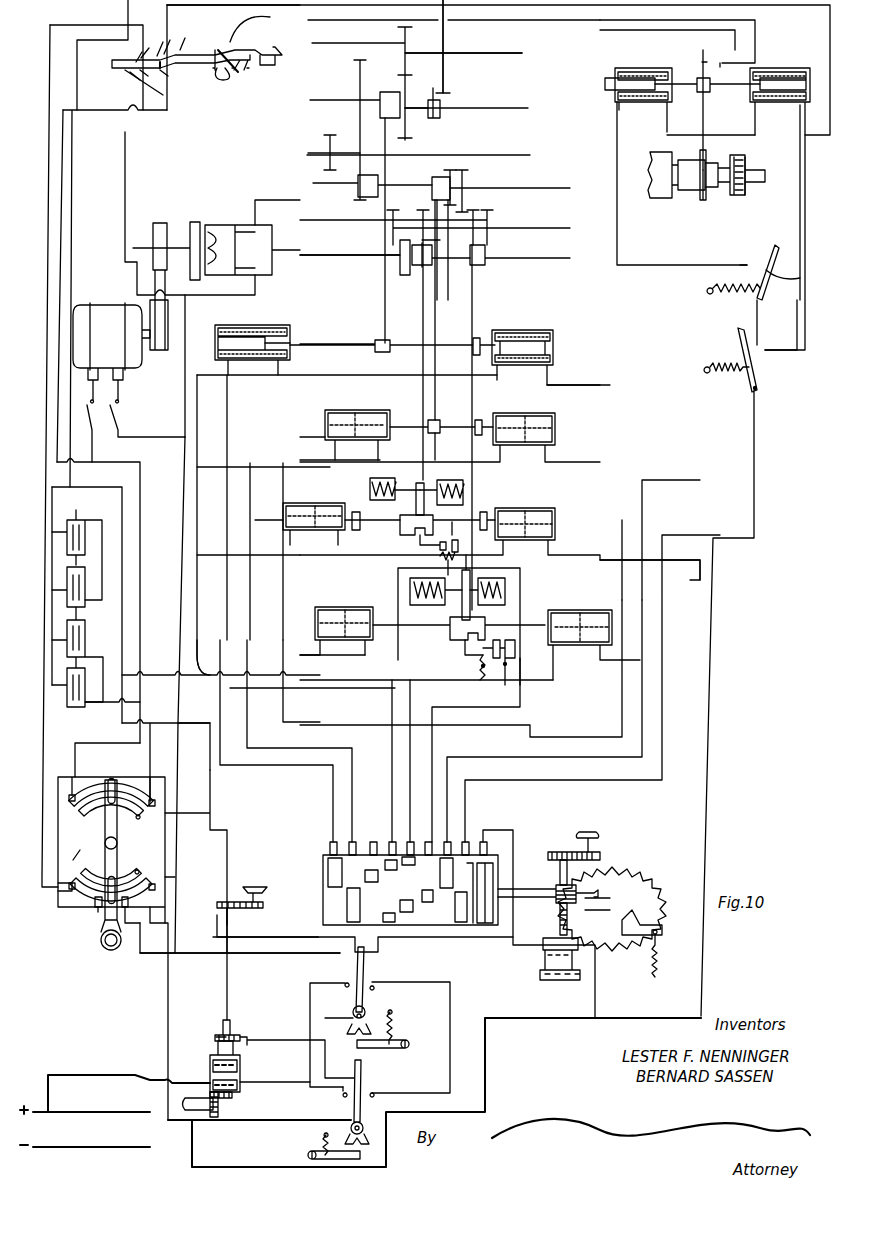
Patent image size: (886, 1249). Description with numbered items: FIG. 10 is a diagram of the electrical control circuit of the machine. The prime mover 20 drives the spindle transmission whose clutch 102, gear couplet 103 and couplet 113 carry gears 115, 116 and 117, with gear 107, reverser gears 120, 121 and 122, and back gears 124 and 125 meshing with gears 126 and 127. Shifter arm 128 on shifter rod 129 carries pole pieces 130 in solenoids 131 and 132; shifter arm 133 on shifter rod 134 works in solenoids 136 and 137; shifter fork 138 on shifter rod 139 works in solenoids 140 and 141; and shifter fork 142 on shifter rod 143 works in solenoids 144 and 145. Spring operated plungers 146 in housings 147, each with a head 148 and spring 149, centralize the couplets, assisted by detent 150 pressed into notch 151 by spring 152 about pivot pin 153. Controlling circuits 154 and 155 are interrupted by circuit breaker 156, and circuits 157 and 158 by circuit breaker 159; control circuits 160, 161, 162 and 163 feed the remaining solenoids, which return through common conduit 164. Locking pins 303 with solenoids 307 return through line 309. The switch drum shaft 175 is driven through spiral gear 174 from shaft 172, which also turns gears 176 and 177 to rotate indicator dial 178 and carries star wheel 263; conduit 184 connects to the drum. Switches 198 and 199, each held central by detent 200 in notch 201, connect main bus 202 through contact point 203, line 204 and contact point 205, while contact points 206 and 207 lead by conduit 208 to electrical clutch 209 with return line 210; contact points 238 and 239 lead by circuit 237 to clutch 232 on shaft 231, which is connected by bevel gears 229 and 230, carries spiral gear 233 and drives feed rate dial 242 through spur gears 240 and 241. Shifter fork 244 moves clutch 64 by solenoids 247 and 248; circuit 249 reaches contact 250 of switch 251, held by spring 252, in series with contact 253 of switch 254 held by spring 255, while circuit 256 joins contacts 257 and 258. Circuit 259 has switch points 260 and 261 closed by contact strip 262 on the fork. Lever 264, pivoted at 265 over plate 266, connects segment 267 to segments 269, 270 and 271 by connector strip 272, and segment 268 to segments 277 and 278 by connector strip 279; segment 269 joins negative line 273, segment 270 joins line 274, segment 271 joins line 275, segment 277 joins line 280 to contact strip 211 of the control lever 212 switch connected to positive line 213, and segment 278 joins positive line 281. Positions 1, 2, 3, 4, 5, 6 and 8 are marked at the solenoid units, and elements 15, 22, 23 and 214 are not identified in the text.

The relay position 1 is at (327, 643).
The relay position 2 is at (597, 655).
The relay position 3 is at (295, 545).
The relay position 4 is at (558, 547).
The relay position 5 is at (340, 453).
The relay position 6 is at (540, 465).
The relay position 8 is at (573, 377).
The contact 15 is at (500, 55).
The prime mover 20 is at (125, 304).
The motor switch 22 is at (168, 350).
The pulley drive 23 is at (154, 224).
The feed-rapid traverse clutch 64 is at (687, 200).
The clutch 102 is at (411, 282).
The gear couplet 103 is at (482, 272).
The gear 107 is at (483, 204).
The shiftable couplet 113 is at (434, 183).
The gear 115 is at (449, 170).
The gear 116 is at (462, 178).
The gear 117 is at (442, 264).
The gear 120 is at (364, 72).
The reverser gear 121 is at (352, 138).
The reverser gear 122 is at (330, 142).
The back gear 124 is at (408, 138).
The back gear 125 is at (439, 118).
The gear 126 is at (405, 36).
The gear 127 is at (450, 33).
The shifter arm 128 is at (390, 278).
The shifter rod 129 is at (353, 343).
The pole pieces 130 is at (254, 328).
The solenoid 131 is at (252, 324).
The solenoid 132 is at (547, 333).
The shifter arm 133 is at (458, 296).
The shifter rod 134 is at (399, 420).
The solenoid 136 is at (366, 408).
The solenoid 137 is at (545, 408).
The shifter fork 138 is at (411, 445).
The shifter rod 139 is at (351, 529).
The solenoid 140 is at (298, 504).
The solenoid 141 is at (565, 503).
The shifter fork 142 is at (495, 578).
The shifter rod 143 is at (517, 615).
The solenoid 144 is at (358, 605).
The solenoid 145 is at (603, 604).
The spring operated plungers 146 is at (407, 468).
The spring containing housing 147 is at (372, 494).
The enlarged head 148 is at (385, 470).
The spring 149 is at (373, 502).
The pivoted detent 150 is at (427, 543).
The V-shaped notch 151 is at (426, 522).
The spring 152 is at (402, 676).
The pivot pin 153 is at (472, 654).
The controlling circuit 154 is at (284, 577).
The controlling circuit 155 is at (609, 562).
The circuit breaker 156 is at (534, 640).
The controlling circuit 157 is at (317, 654).
The controlling circuit 158 is at (411, 643).
The circuit breaker 159 is at (470, 520).
The control circuit 160 is at (318, 749).
The control circuit 161 is at (566, 754).
The control circuit 162 is at (220, 712).
The control circuit 163 is at (659, 724).
The common return conduit 164 is at (206, 677).
The shaft 172 is at (576, 871).
The spiral gear 174 is at (556, 905).
The switch drum shaft 175 is at (546, 886).
The gear 176 is at (554, 848).
The gear 177 is at (598, 861).
The indicator dial 178 is at (594, 838).
The conduit 184 is at (508, 841).
The switch 198 is at (365, 965).
The switch 199 is at (363, 1064).
The spring pressed detent 200 is at (380, 1164).
The V-shaped notch 201 is at (365, 1128).
The main bus 202 is at (140, 1145).
The contact point 203 is at (361, 1086).
The line 204 is at (248, 1033).
The contact point 205 is at (384, 982).
The contact point 206 is at (376, 1094).
The contact point 207 is at (377, 988).
The control conduit 208 is at (518, 1012).
The electrical clutch 209 is at (570, 966).
The return line 210 is at (472, 952).
The contact strip 211 is at (176, 82).
The control lever 212 is at (212, 46).
The positive power line 213 is at (111, 25).
The positive lead 214 is at (96, 1105).
The bevel gear 229 is at (220, 1105).
The bevel gear 230 is at (238, 1090).
The shaft 231 is at (270, 1023).
The electrically operated clutch 232 is at (242, 1058).
The spiral gear 233 is at (217, 1037).
The controlling circuit 237 is at (290, 1084).
The contact point 238 is at (345, 981).
The contact point 239 is at (344, 1105).
The spur gear 240 is at (235, 898).
The spur gear 241 is at (259, 915).
The feed rate dial 242 is at (263, 890).
The shifter fork 244 is at (706, 115).
The solenoid 247 is at (652, 64).
The solenoid 248 is at (802, 64).
The controlling circuit 249 is at (616, 232).
The contact point 250 is at (740, 264).
The rate control switch 251 is at (773, 246).
The spring 252 is at (728, 294).
The contact 253 is at (741, 350).
The switch lever 254 is at (758, 386).
The spring 255 is at (718, 373).
The controlling circuit 256 is at (798, 212).
The contact 257 is at (799, 280).
The contact 258 is at (766, 352).
The controlling circuit 259 is at (275, 210).
The switch point 260 is at (728, 51).
The switch point 261 is at (718, 62).
The contact strip 262 is at (706, 40).
The star wheel 263 is at (205, 34).
The switch lever 264 is at (106, 826).
The pivot 265 is at (104, 843).
The plate 266 is at (58, 896).
The contact segment 267 is at (122, 875).
The contact segment 268 is at (128, 814).
The segment 269 is at (141, 924).
The segment 270 is at (93, 907).
The segment 271 is at (84, 907).
The connector strip 272 is at (112, 872).
The negative power line 273 is at (127, 188).
The line 274 is at (246, 963).
The line 275 is at (75, 190).
The segment 277 is at (72, 794).
The segment 278 is at (142, 777).
The connector strip 279 is at (114, 773).
The line 280 is at (66, 209).
The positive power line 281 is at (212, 804).
The locking pin 303 is at (76, 519).
The operating solenoid 307 is at (85, 529).
The return line 309 is at (180, 770).